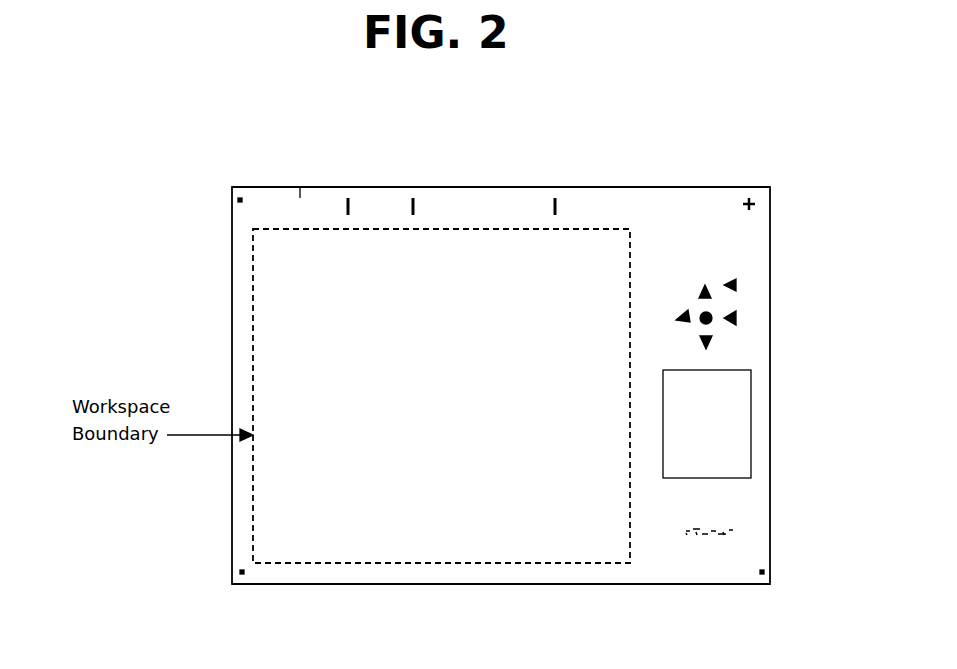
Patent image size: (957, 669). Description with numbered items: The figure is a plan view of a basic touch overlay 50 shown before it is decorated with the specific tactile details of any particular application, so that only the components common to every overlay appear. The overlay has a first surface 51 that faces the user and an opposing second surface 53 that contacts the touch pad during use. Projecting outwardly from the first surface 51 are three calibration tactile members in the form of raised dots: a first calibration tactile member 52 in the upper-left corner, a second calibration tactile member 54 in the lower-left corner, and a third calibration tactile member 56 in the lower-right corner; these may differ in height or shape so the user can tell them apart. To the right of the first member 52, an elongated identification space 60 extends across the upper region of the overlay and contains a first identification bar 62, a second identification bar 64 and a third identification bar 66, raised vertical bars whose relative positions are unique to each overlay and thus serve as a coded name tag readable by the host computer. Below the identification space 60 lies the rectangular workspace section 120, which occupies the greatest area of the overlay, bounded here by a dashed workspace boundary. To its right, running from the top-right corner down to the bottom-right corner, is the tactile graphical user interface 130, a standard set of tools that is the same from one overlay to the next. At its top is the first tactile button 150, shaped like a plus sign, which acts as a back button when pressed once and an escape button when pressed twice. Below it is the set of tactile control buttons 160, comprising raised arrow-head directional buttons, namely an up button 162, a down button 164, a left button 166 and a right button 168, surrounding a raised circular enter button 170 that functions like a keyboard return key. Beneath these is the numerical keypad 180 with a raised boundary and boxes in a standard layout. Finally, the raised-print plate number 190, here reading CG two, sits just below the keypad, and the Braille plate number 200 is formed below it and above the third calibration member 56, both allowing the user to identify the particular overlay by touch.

The touch overlay 50 is at (469, 152).
The first surface 51 is at (655, 187).
The first calibration tactile member 52 is at (241, 199).
The second surface 53 is at (497, 584).
The second calibration tactile member 54 is at (242, 572).
The third calibration tactile member 56 is at (762, 572).
The identification space 60 is at (300, 198).
The first identification bar 62 is at (352, 203).
The second identification bar 64 is at (417, 207).
The third identification bar 66 is at (560, 205).
The workspace section 120 is at (437, 351).
The tactile graphical user interface (TGUI) 130 is at (748, 298).
The first tactile button 150 is at (753, 212).
The set of tactile control buttons 160 is at (732, 285).
The up button 162 is at (703, 292).
The down button 164 is at (700, 342).
The left button 166 is at (680, 310).
The right button 168 is at (734, 320).
The enter button 170 is at (710, 308).
The numerical keypad 180 is at (751, 465).
The raised-print plate number 190 is at (738, 498).
The Braille plate number 200 is at (700, 541).